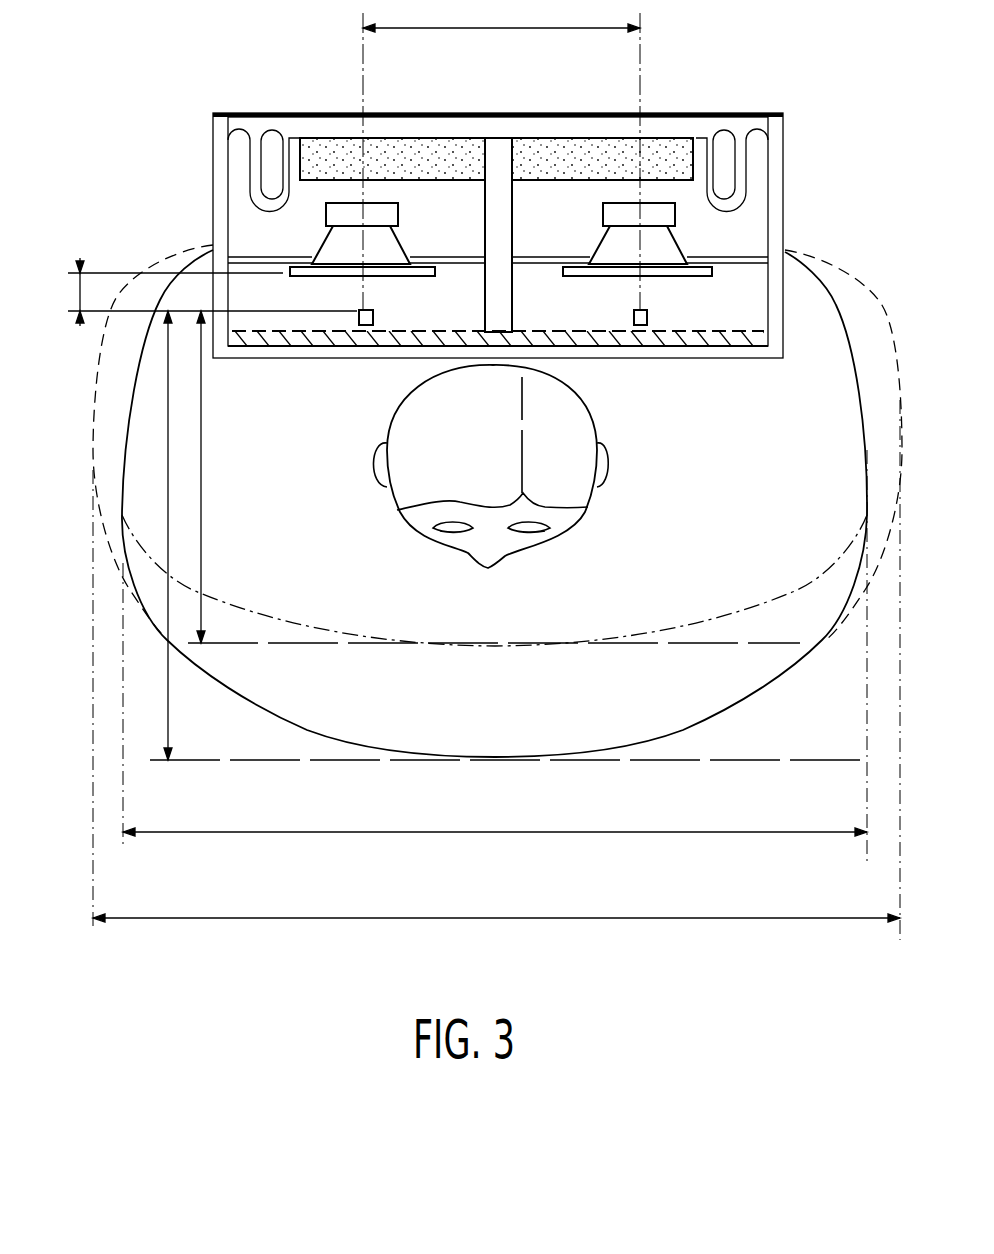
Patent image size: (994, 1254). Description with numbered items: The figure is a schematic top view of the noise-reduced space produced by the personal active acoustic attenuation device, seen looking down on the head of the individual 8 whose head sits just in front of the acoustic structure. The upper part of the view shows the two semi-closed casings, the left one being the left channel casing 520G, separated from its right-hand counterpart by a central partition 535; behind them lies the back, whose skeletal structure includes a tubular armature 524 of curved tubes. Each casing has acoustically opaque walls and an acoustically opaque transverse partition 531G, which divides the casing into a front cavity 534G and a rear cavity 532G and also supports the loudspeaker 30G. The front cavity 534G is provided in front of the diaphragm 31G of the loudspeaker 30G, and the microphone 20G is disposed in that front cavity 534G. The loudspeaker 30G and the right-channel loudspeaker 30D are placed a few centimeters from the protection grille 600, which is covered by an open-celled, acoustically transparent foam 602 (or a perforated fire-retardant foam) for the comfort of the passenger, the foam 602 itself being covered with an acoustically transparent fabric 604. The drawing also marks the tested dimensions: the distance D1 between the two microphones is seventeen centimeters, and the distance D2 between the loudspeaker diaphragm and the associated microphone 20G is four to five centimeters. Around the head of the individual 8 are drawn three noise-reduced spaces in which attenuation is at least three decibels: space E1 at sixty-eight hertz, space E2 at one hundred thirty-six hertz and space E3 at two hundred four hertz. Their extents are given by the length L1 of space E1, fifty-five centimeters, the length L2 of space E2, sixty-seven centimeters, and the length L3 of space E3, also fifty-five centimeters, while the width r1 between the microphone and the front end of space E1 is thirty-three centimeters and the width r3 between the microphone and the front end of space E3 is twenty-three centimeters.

The fabric 604 is at (785, 165).
The rear cavity 532G is at (243, 220).
The left channel casing 520G is at (227, 172).
The armature 524 is at (727, 132).
The central partition 535 is at (496, 123).
The transverse partition 531G is at (462, 263).
The loudspeaker 30G is at (400, 247).
The diaphragm 31G is at (330, 278).
The loudspeaker 30D is at (600, 247).
The microphone 20G is at (362, 330).
The protection grille 600 is at (690, 350).
The foam 602 is at (767, 342).
The front cavity 534G is at (325, 303).
The distance between the two microphones D1 is at (501, 16).
The distance between loudspeaker diaphragm and microphone D2 is at (164, 292).
The width of space E1 r1 is at (168, 512).
The width of space E3 r3 is at (202, 510).
The length of space E1 L1 is at (495, 816).
The length of space E3 L3 is at (495, 657).
The length of space E2 L2 is at (496, 670).
The noise-reduced space E1 is at (308, 727).
The noise-reduced space E2 is at (845, 268).
The noise-reduced space E3 is at (253, 613).
The individual 8 is at (538, 547).